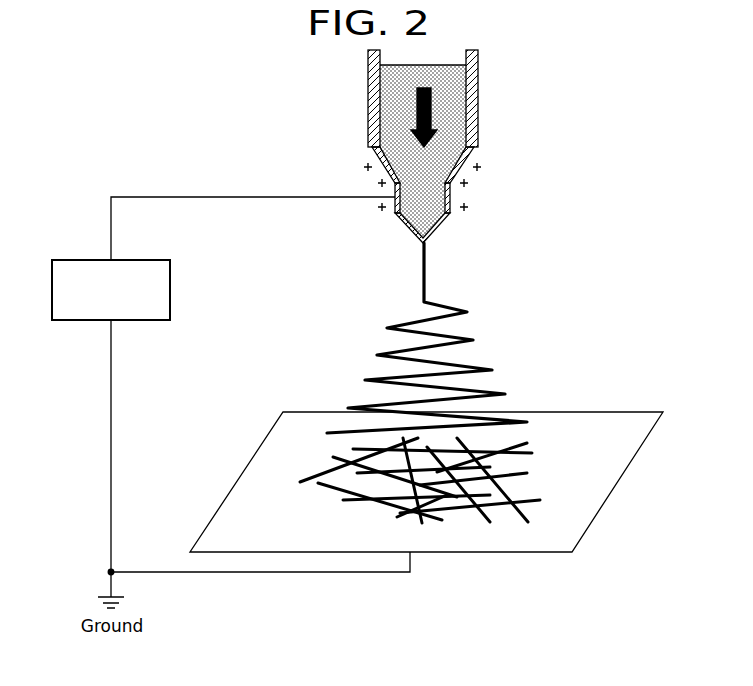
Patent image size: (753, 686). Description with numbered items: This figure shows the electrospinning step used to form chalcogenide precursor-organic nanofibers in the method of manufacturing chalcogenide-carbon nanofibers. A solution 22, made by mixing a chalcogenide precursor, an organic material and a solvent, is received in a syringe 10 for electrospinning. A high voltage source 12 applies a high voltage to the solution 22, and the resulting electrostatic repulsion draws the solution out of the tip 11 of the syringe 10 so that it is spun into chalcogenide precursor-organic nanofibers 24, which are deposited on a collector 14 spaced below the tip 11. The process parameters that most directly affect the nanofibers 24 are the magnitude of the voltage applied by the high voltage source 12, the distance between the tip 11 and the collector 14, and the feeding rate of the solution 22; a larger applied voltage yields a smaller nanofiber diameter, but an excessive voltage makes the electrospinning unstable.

The syringe 10 is at (471, 75).
The solution 22 is at (454, 108).
The tip 11 is at (451, 195).
The high voltage source 12 is at (128, 260).
The chalcogenide precursor-organic nanofibers 24 is at (532, 455).
The collector 14 is at (588, 503).